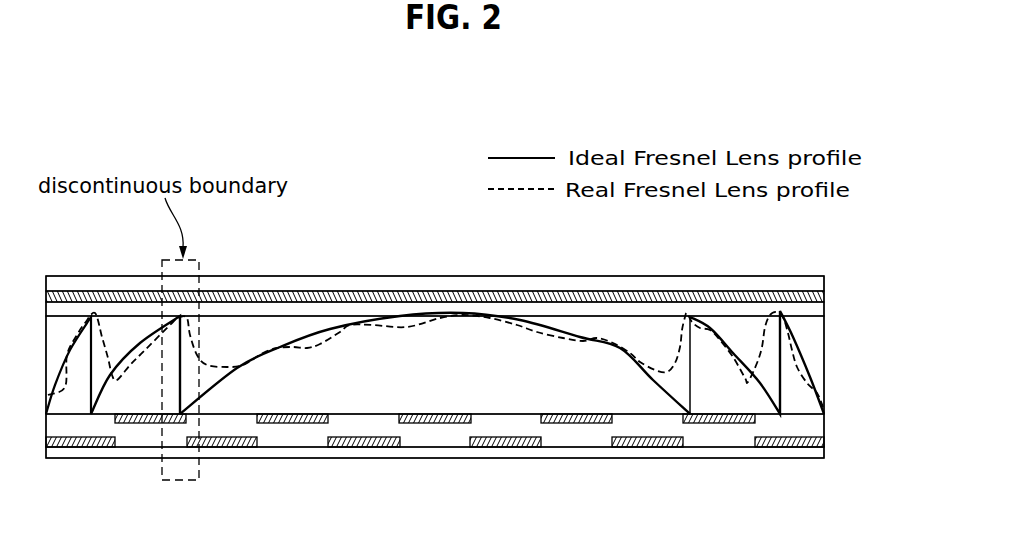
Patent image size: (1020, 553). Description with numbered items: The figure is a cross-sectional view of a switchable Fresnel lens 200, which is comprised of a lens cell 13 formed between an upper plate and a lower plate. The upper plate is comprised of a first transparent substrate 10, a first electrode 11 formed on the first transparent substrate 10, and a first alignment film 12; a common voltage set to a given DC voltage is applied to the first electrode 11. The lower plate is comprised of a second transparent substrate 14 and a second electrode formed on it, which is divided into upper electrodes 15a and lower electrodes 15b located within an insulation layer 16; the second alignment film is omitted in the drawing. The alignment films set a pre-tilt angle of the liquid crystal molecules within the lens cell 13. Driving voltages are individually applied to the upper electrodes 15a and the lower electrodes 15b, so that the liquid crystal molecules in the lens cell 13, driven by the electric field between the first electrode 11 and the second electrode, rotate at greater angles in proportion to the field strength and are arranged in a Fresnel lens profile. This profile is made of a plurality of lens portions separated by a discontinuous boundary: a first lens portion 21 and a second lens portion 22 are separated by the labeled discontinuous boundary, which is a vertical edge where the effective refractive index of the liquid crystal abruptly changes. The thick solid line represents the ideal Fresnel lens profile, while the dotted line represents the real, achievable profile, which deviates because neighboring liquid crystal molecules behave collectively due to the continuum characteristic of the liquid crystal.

The switchable Fresnel lens 200 is at (122, 123).
The first transparent substrate 10 is at (818, 274).
The first electrode 11 is at (818, 288).
The first alignment film 12 is at (818, 304).
The lens cell 13 is at (818, 354).
The second transparent substrate 14 is at (818, 449).
The upper electrodes 15a is at (723, 423).
The lower electrodes 15b is at (787, 447).
The insulation layer 16 is at (818, 418).
The first lens portion 21 is at (152, 390).
The second lens portion 22 is at (445, 388).